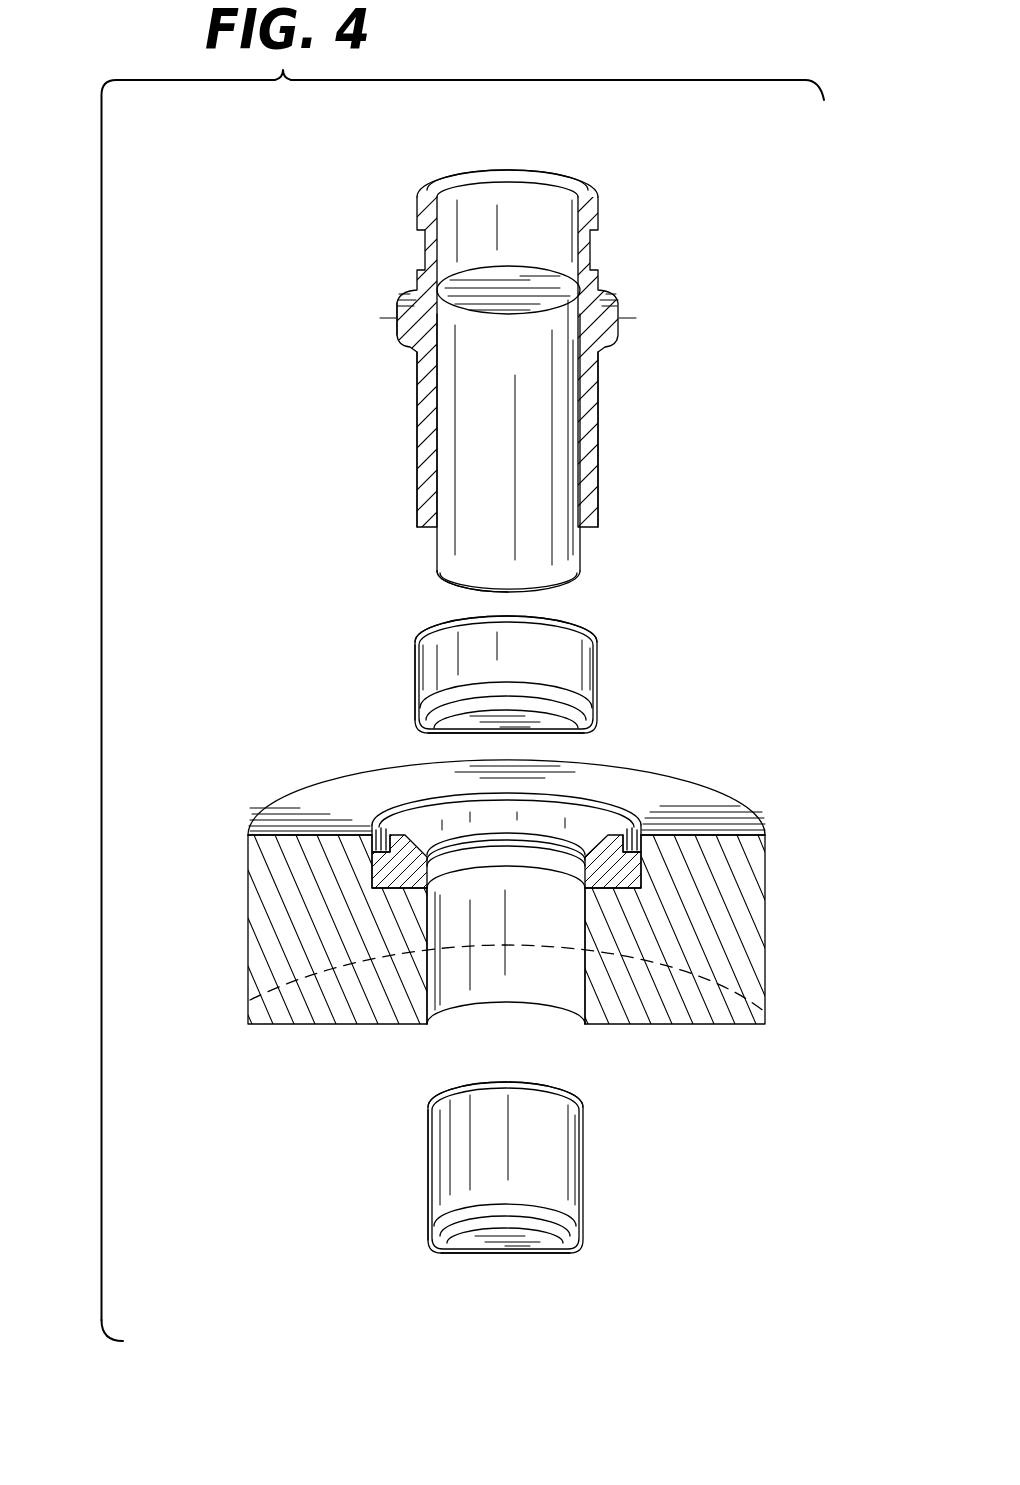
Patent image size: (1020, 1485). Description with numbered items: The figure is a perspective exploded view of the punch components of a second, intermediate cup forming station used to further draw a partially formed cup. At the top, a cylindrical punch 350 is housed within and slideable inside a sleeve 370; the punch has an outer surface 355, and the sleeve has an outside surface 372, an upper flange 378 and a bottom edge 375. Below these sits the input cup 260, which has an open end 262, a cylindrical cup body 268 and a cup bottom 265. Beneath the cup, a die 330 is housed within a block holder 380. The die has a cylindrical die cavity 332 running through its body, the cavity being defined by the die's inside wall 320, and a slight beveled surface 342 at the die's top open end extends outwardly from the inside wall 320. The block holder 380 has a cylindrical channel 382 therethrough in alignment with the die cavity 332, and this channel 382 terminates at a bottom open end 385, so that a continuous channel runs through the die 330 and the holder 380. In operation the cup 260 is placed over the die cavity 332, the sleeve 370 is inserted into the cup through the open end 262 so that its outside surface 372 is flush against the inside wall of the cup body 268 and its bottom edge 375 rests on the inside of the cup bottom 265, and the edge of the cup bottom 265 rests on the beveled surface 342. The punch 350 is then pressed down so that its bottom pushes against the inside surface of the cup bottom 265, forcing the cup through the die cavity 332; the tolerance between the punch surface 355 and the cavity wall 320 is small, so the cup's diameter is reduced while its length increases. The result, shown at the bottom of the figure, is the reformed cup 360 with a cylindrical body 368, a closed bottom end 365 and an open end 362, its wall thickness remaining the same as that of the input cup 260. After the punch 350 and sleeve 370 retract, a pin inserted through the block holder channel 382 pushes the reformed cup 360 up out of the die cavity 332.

The block holder 380 is at (248, 881).
The flange 378 is at (397, 324).
The sleeve 370 is at (415, 380).
The outside surface of sleeve 372 is at (606, 413).
The bottom edge of sleeve 375 is at (415, 541).
The punch 350 is at (585, 557).
The surface of punch 355 is at (440, 553).
The cup open end 262 is at (580, 626).
The cup body 268 is at (413, 682).
The cup 260 is at (603, 672).
The cup bottom 265 is at (598, 734).
The beveled surface 342 is at (430, 824).
The die 330 is at (370, 872).
The inside wall of die 320 is at (453, 852).
The die cavity 332 is at (485, 868).
The channel 382 is at (457, 993).
The bottom open end of channel 385 is at (557, 1008).
The open end of reformed cup 362 is at (452, 1084).
The reformed cup 360 is at (585, 1140).
The cylindrical body of reformed cup 368 is at (428, 1189).
The closed end of reformed cup 365 is at (452, 1258).